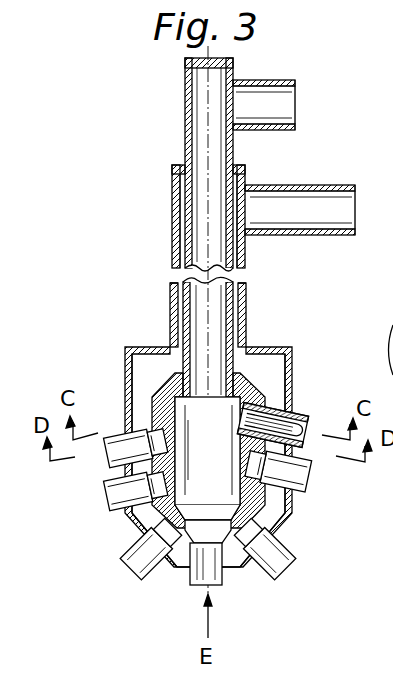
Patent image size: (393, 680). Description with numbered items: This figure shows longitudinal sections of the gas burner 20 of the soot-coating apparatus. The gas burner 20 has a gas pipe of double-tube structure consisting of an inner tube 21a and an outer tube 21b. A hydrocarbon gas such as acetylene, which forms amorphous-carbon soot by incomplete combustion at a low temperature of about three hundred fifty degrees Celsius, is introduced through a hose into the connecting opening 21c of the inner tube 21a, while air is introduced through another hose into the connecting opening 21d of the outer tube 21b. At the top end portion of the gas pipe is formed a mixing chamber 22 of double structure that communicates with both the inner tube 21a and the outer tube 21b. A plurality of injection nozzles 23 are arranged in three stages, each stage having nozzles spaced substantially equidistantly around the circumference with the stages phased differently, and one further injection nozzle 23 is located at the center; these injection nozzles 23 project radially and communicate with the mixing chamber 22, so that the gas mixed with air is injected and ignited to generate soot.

The gas burner 20 is at (177, 86).
The inner tube 21a is at (184, 110).
The outer tube 21b is at (172, 222).
The connecting opening 21c is at (296, 98).
The connecting opening 21d is at (303, 185).
The mixing chamber 22 is at (292, 370).
The injection nozzles 23 is at (308, 488).